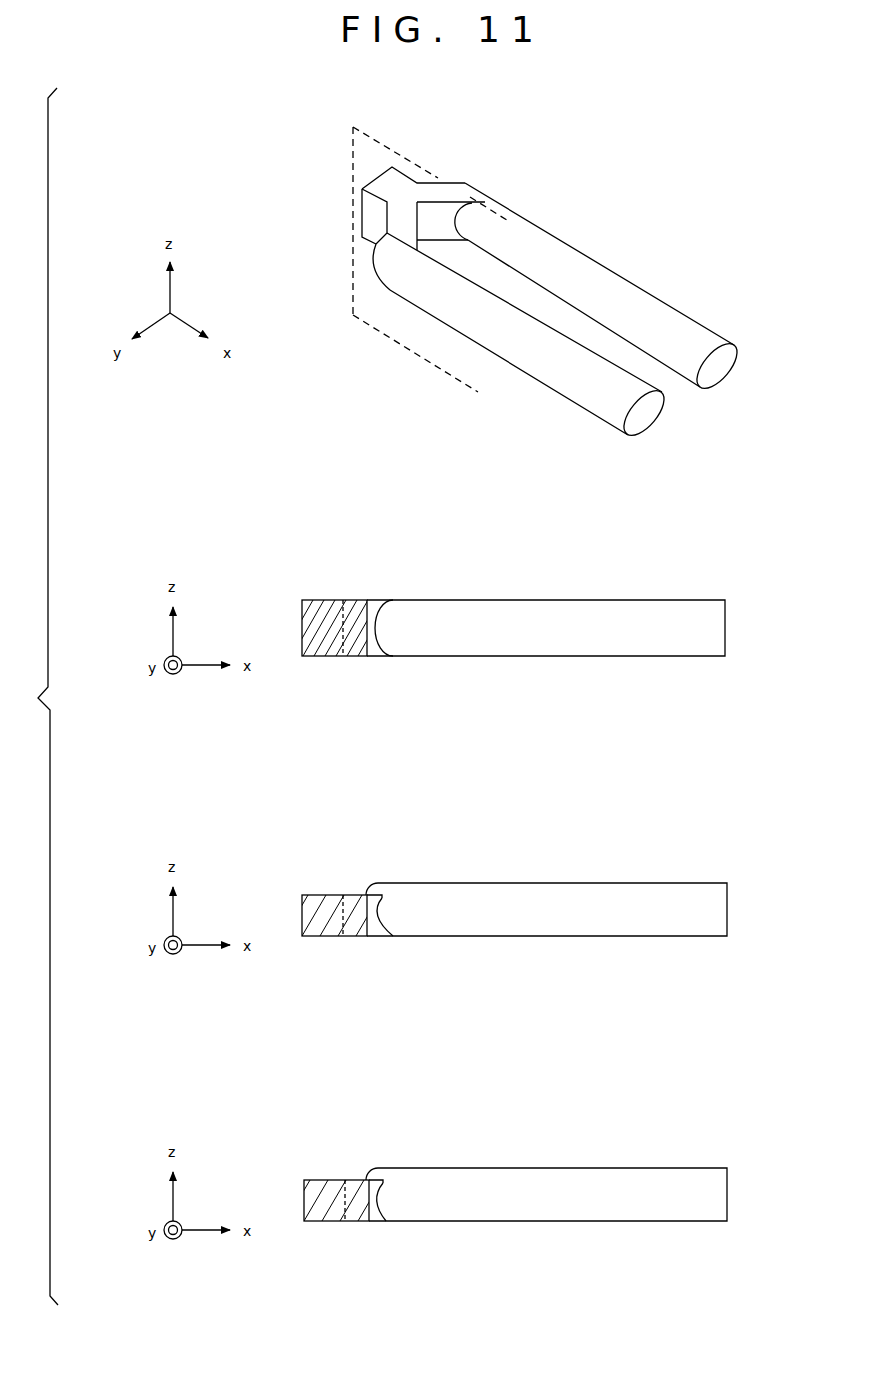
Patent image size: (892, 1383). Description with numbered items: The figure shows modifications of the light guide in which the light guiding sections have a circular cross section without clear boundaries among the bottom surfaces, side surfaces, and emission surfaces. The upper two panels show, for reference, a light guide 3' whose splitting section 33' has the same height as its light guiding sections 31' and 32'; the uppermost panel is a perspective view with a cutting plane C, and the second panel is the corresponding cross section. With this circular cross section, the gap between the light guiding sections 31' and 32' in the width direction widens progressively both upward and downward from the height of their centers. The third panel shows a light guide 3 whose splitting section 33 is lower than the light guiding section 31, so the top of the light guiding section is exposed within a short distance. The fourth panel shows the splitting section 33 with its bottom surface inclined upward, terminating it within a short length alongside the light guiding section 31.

The light guide 3 is at (504, 1124).
The light guide 3' is at (495, 561).
The light guiding section 31 is at (546, 1018).
The light guiding section 31' is at (555, 419).
The light guiding section 32' is at (522, 343).
The splitting section 33 is at (333, 1014).
The splitting section 33' is at (377, 378).
The cutting plane C is at (393, 317).